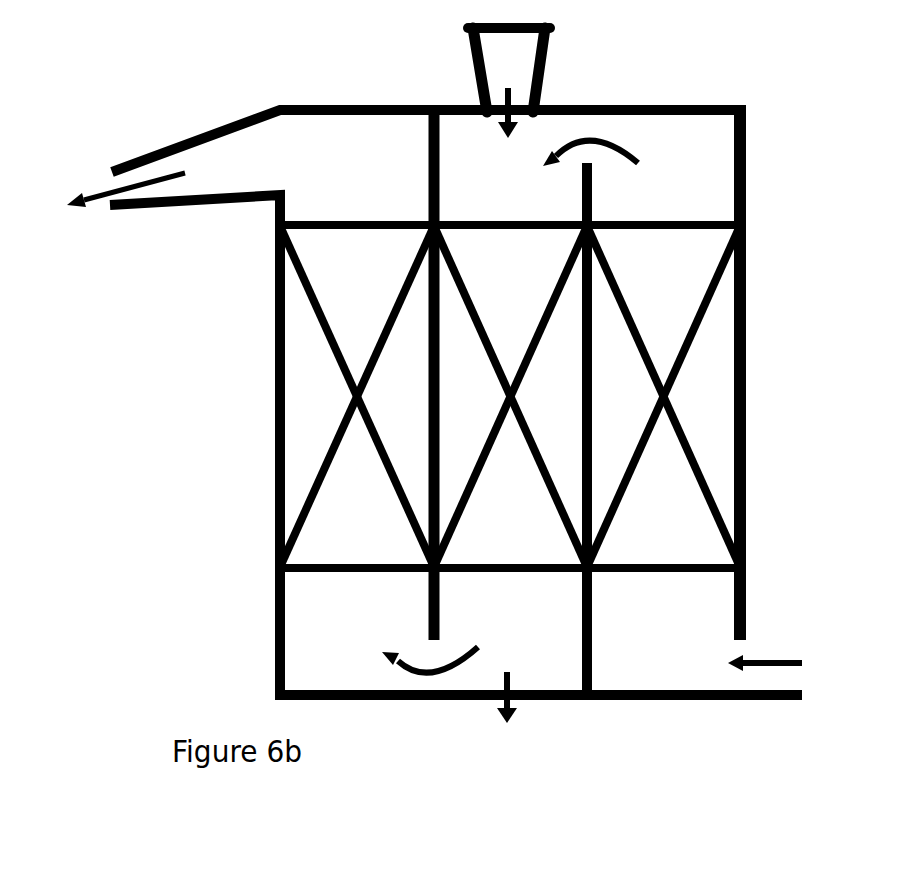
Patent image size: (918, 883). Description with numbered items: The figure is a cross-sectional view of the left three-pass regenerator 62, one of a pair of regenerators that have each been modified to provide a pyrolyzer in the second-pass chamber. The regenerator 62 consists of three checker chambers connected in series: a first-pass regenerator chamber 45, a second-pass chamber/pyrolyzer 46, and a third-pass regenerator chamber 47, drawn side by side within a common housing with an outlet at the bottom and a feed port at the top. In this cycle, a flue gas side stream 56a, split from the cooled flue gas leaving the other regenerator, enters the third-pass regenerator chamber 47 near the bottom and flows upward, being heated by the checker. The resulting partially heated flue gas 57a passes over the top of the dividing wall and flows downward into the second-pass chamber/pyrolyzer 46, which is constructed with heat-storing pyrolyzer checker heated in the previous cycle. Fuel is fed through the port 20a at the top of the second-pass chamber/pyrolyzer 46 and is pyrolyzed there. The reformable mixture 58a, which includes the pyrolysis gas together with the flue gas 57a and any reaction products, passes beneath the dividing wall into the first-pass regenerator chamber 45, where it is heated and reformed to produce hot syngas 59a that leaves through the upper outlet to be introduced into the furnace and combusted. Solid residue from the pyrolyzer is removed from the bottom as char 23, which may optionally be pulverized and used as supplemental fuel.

The port 20a is at (509, 83).
The first-pass regenerator chamber 45 is at (357, 370).
The second-pass chamber/pyrolyzer 46 is at (510, 371).
The third-pass regenerator chamber 47 is at (663, 369).
The partially heated flue gas 57a is at (593, 144).
The reformable mixture 58a is at (430, 658).
The flue gas side stream 56a is at (772, 653).
The hot syngas 59a is at (106, 199).
The three-pass regenerator 62 is at (275, 333).
The char 23 is at (506, 720).